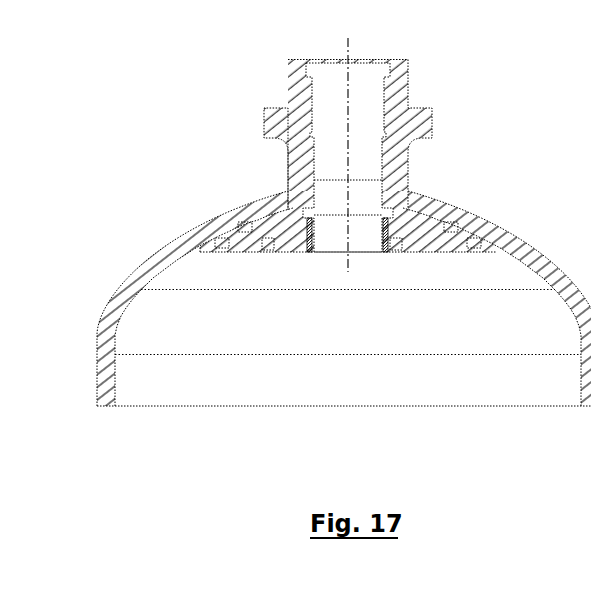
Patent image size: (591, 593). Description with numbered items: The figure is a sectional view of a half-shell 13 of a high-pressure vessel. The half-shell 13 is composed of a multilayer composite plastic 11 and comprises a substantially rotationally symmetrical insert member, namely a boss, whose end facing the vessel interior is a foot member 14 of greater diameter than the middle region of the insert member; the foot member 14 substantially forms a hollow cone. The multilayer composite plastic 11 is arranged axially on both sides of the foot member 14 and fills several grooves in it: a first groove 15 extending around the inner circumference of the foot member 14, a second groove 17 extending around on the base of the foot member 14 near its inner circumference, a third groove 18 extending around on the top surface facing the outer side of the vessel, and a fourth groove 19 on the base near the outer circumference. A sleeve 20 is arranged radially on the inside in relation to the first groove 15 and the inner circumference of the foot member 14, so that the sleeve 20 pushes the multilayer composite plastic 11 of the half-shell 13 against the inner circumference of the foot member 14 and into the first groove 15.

The multilayer composite plastic 11 is at (183, 245).
The half-shell 13 is at (98, 130).
The foot member 14 is at (270, 213).
The first groove 15 is at (398, 223).
The second groove 17 is at (266, 242).
The third groove 18 is at (243, 224).
The fourth groove 19 is at (225, 246).
The sleeve 20 is at (386, 244).